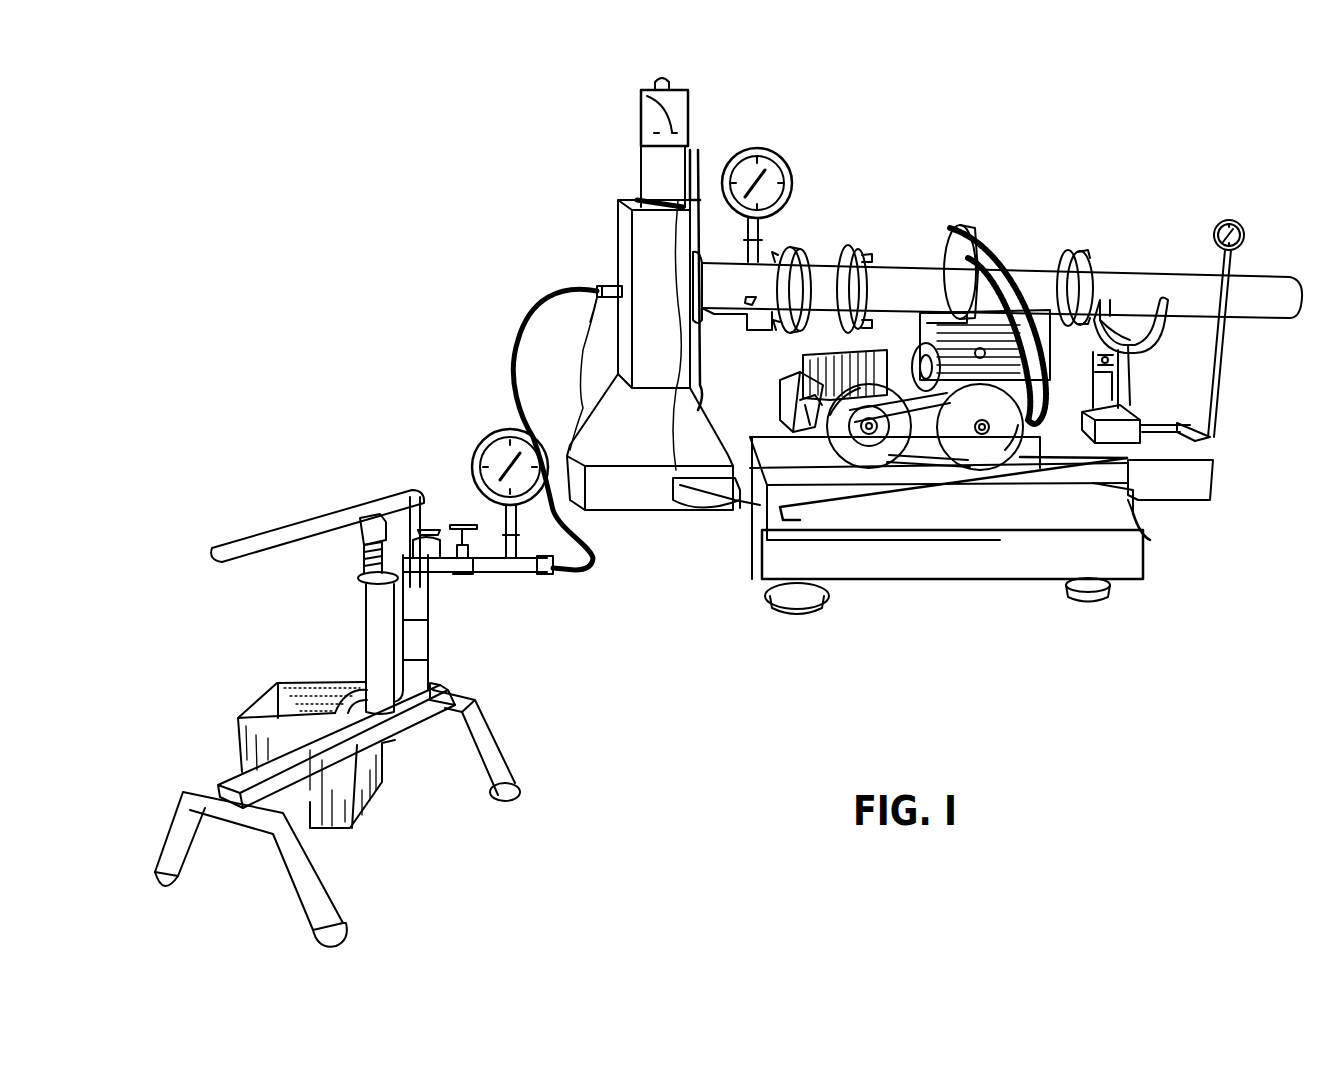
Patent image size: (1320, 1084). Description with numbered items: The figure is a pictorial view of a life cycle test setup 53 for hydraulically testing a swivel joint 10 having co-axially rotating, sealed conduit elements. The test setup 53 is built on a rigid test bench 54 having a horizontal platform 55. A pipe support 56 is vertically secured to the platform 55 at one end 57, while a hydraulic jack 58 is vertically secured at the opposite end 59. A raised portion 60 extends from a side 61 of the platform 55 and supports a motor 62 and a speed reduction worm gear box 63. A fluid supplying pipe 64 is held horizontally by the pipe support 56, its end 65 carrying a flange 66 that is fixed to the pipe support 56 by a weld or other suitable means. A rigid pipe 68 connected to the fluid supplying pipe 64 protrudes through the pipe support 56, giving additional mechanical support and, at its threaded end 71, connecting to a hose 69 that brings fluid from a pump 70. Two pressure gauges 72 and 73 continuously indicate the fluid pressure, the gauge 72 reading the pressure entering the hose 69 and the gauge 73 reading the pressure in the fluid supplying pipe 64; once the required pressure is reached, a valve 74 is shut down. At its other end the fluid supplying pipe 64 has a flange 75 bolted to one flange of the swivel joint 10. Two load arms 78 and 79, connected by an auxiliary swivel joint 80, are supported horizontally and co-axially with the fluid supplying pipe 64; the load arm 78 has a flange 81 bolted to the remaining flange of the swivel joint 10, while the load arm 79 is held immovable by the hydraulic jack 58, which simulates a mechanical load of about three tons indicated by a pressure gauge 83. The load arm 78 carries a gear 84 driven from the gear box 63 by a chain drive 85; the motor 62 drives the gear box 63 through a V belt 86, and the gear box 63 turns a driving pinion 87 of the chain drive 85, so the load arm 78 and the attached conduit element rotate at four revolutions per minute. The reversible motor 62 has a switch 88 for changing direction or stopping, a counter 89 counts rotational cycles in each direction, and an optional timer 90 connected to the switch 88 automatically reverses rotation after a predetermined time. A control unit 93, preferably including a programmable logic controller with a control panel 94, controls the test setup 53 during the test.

The swivel joint 10 is at (823, 253).
The test setup 53 is at (397, 192).
The test bench 54 is at (743, 530).
The platform 55 is at (1057, 410).
The pipe support 56 is at (643, 240).
The end 57 is at (640, 497).
The hydraulic jack 58 is at (1123, 395).
The opposite end 59 is at (1168, 444).
The raised portion 60 is at (868, 392).
The side 61 is at (1165, 486).
The motor 62 is at (880, 440).
The speed reduction worm gear box 63 is at (992, 470).
The fluid supplying pipe 64 is at (717, 283).
The end 65 is at (722, 308).
The flange 66 is at (695, 215).
The rigid pipe 68 is at (598, 283).
The hose 69 is at (522, 320).
The pump 70 is at (382, 628).
The end 71 is at (597, 297).
The pressure gauge 72 is at (495, 432).
The pressure gauge 73 is at (765, 153).
The valve 74 is at (470, 566).
The flange 75 is at (790, 325).
The load arm 78 is at (903, 283).
The load arm 79 is at (1153, 287).
The auxiliary swivel joint 80 is at (1080, 260).
The flange 81 is at (850, 247).
The pressure gauge 83 is at (1227, 215).
The gear 84 is at (940, 262).
The chain drive 85 is at (997, 263).
The V belt 86 is at (920, 463).
The driving pinion 87 is at (1133, 513).
The switch 88 is at (800, 427).
The counter 89 is at (642, 93).
The timer 90 is at (653, 133).
The control unit 93 is at (696, 107).
The control panel 94 is at (678, 103).